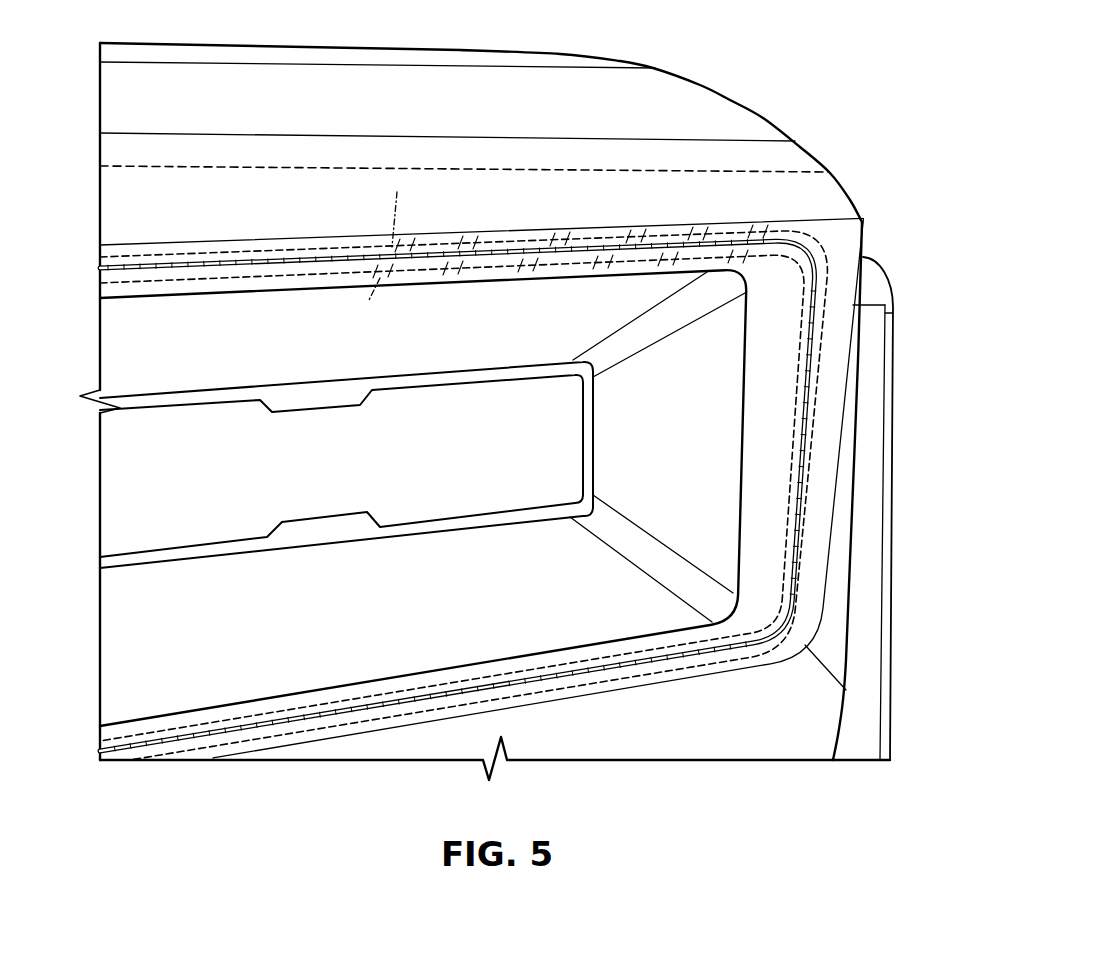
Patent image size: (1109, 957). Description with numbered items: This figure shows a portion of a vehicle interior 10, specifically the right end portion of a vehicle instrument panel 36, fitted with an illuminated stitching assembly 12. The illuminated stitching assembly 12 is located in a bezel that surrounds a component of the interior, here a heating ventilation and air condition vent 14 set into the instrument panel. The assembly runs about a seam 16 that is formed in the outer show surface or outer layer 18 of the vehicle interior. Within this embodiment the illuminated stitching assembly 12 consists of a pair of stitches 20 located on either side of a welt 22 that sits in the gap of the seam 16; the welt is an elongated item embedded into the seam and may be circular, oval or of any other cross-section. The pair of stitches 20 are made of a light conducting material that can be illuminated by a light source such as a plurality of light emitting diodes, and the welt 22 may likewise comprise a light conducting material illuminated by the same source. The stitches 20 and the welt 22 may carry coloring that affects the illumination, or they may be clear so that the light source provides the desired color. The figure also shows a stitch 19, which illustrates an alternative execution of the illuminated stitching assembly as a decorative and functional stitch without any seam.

The vehicle interior 10 is at (888, 92).
The illuminated stitching assembly 12 is at (615, 218).
The heating ventilation and air condition vent 14 is at (313, 383).
The seam 16 is at (824, 317).
The outer layer 18 is at (673, 115).
The stitch 19 is at (507, 168).
The pair of stitches 20 is at (815, 248).
The welt 22 is at (657, 248).
The vehicle instrument panel 36 is at (651, 607).